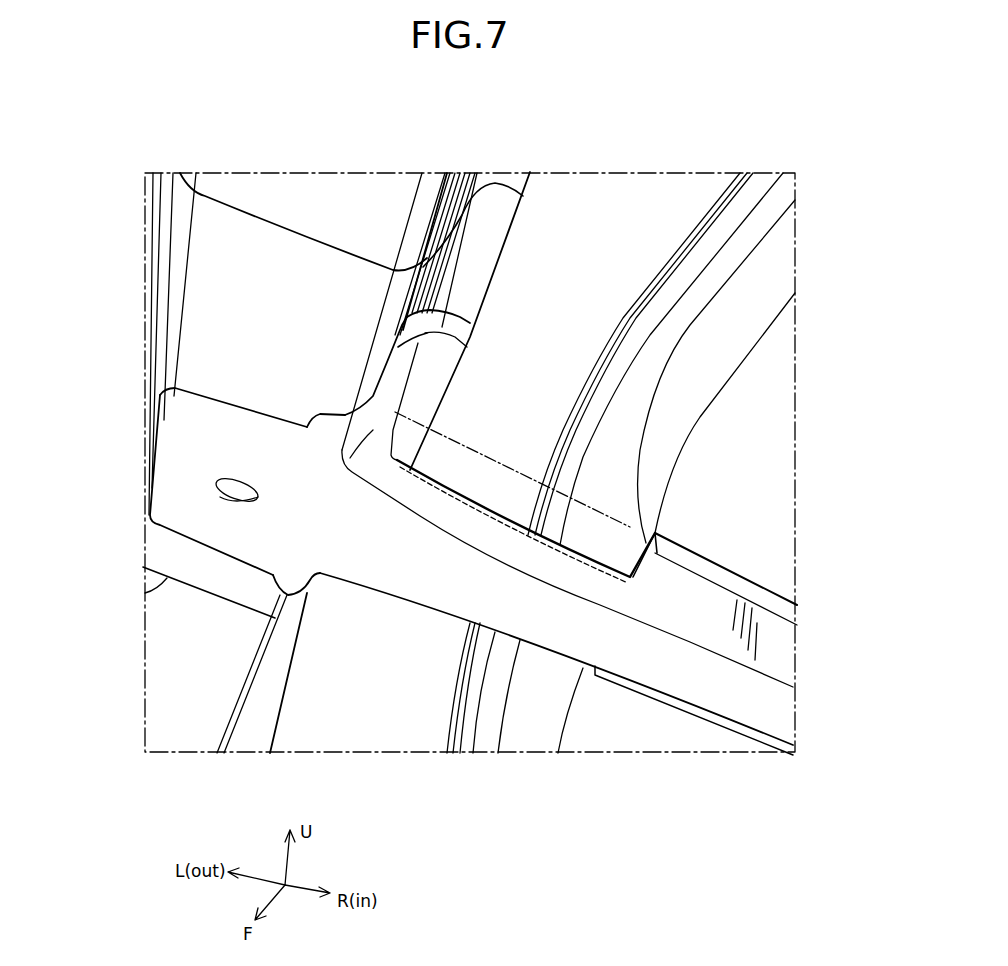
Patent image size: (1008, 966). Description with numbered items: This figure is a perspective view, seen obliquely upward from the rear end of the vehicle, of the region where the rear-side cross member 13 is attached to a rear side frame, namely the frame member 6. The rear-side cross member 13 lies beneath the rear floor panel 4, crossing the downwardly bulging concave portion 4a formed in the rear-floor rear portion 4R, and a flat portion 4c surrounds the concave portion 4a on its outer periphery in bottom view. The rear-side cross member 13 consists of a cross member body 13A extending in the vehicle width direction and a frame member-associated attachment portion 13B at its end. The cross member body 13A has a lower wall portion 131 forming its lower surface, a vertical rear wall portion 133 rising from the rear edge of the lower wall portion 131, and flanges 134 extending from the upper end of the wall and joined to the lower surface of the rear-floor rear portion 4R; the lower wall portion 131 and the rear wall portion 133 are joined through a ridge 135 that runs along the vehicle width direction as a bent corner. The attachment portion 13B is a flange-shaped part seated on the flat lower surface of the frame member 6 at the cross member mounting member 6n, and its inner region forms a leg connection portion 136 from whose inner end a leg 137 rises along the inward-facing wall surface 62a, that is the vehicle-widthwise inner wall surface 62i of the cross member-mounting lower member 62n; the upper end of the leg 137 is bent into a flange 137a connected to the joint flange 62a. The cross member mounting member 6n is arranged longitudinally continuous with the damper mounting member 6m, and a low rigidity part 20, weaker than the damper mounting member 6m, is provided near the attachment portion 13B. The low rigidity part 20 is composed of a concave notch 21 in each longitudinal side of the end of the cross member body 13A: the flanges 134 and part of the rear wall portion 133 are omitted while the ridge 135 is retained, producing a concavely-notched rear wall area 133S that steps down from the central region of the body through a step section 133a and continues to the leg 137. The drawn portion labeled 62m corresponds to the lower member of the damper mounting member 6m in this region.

The joint flange 62a is at (506, 182).
The rear-floor rear portion 4R is at (661, 334).
The rear floor panel 4 is at (593, 187).
The flat portion 4c is at (645, 193).
The frame member 6 is at (517, 250).
The vehicle-widthwise inner wall surface 62i is at (443, 273).
The flange 137a is at (458, 323).
The leg 137 is at (393, 352).
The frame member-associated attachment portion 13B is at (263, 417).
The leg connection portion 136 is at (313, 413).
The low rigidity part 20 is at (468, 455).
The concave notch 21 is at (507, 462).
The concave portion 4a is at (775, 440).
The concavely-notched rear wall area 133S is at (472, 527).
The step section 133a is at (623, 563).
The flange 134 is at (725, 578).
The cross member-mounting lower member 62n is at (116, 568).
The cross member mounting member 6n is at (147, 595).
The ridge 135 is at (578, 597).
The garnish portion 62m is at (170, 604).
The damper mounting member 6m is at (200, 582).
The rear wall portion 133 is at (787, 650).
The cross member body 13A is at (625, 728).
The rear-side cross member 13 is at (652, 744).
The lower wall portion 131 is at (742, 712).